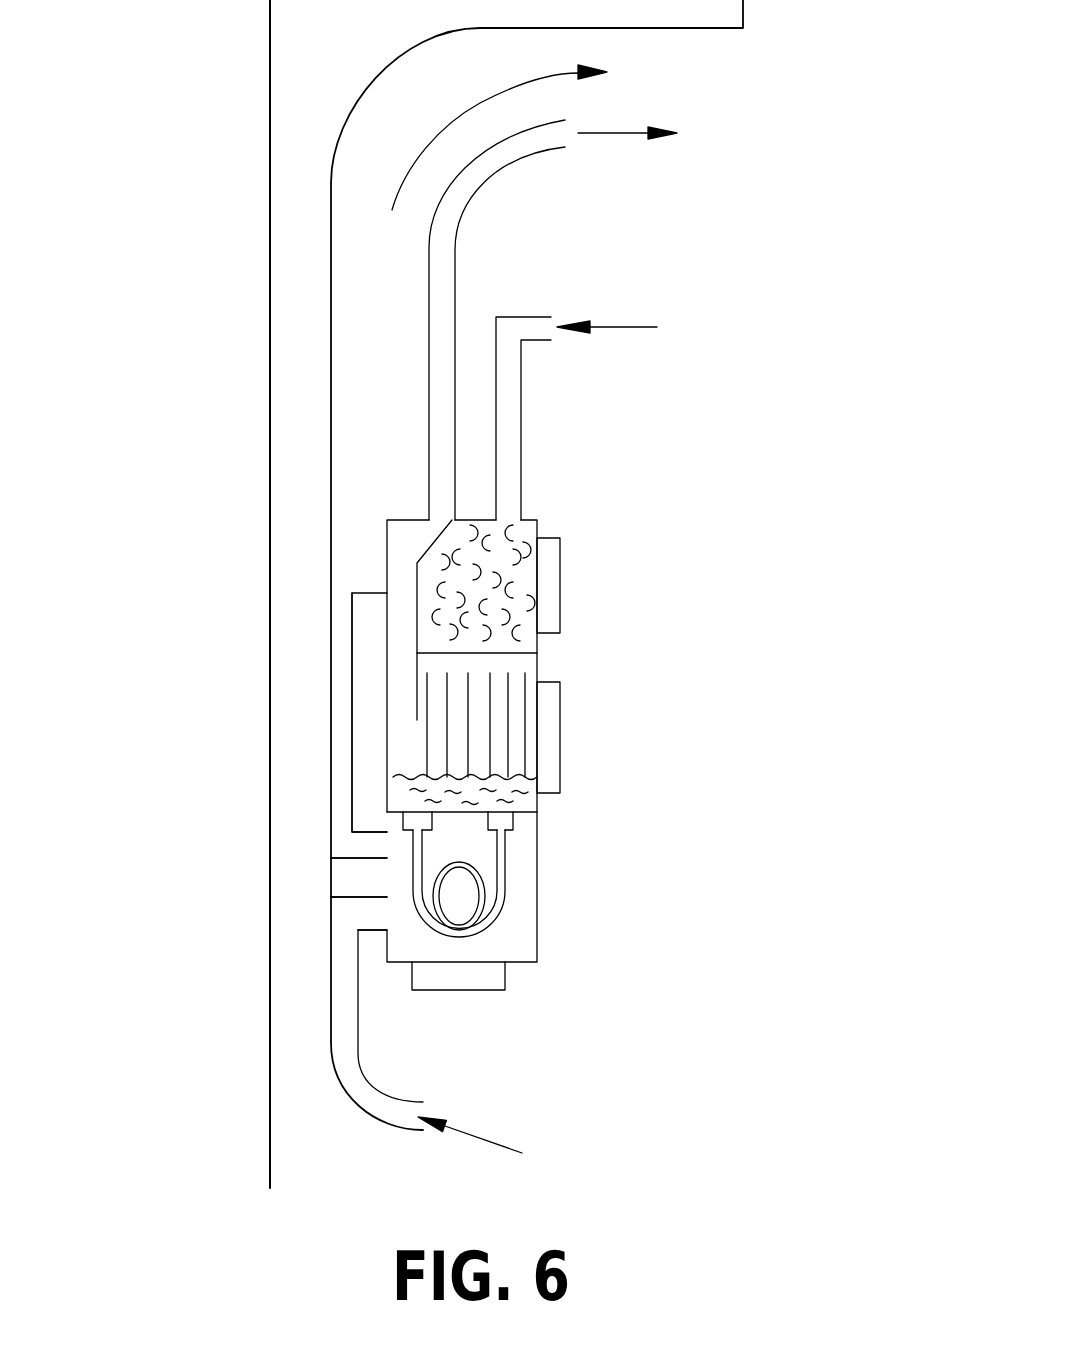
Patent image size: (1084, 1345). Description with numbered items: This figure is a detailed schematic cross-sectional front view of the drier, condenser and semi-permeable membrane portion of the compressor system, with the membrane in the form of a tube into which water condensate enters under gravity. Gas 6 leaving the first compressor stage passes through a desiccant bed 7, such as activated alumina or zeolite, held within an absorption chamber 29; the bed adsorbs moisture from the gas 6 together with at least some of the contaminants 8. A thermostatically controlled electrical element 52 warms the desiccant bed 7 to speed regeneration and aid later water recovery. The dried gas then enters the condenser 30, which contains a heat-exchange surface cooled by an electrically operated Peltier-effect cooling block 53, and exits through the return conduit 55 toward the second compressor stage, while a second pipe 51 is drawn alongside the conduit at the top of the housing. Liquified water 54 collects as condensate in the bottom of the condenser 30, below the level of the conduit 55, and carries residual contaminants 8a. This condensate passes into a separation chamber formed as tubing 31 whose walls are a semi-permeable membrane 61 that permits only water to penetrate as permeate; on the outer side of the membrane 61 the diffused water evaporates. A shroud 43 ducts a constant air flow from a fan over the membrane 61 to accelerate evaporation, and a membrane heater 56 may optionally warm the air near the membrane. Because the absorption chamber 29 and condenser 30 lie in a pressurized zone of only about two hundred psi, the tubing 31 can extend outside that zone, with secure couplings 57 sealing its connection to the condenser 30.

The gas 6 is at (644, 131).
The contaminants 8 is at (640, 328).
The desiccant bed 7 is at (500, 573).
The residual contaminants 8a is at (537, 800).
The absorption chamber 29 is at (380, 568).
The condenser 30 is at (387, 730).
The tubing 31 is at (413, 903).
The shroud 43 is at (295, 273).
The return pipe 51 is at (523, 415).
The electrical element 52 is at (560, 590).
The cooling block 53 is at (560, 710).
The liquified water 54 is at (403, 800).
The conduit 55 is at (427, 453).
The membrane heater 56 is at (470, 992).
The couplings 57 is at (505, 852).
The semi-permeable membrane 61 is at (498, 917).